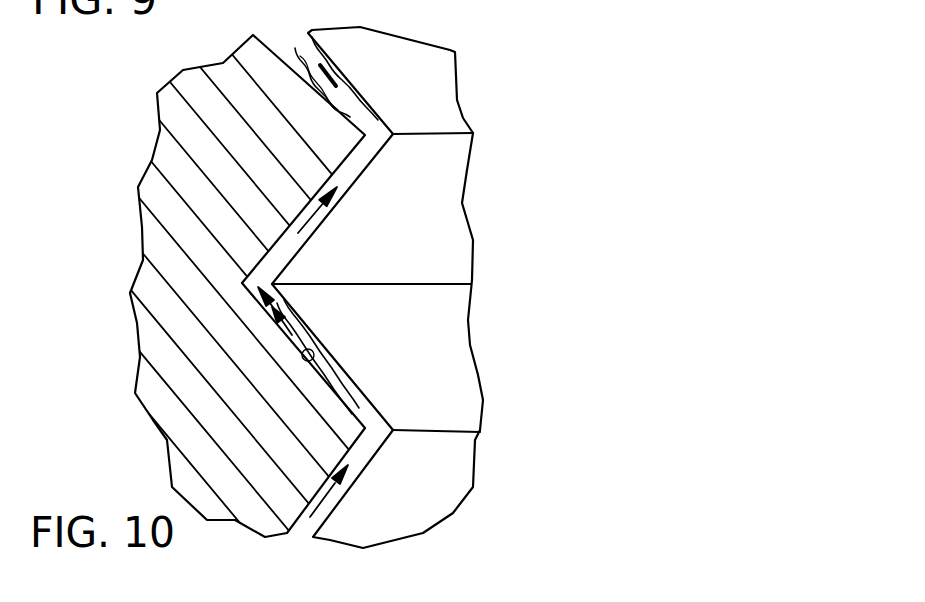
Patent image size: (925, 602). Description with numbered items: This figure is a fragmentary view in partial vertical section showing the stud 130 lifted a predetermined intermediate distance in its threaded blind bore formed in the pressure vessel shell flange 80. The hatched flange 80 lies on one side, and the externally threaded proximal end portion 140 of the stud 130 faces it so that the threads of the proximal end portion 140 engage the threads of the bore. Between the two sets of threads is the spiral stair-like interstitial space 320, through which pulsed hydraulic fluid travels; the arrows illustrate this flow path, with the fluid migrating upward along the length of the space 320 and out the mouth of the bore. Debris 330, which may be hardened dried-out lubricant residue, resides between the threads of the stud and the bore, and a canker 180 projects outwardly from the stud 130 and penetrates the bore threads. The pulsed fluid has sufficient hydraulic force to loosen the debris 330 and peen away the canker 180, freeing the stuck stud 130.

The pressure vessel shell flange 80 is at (164, 278).
The stud 130 is at (433, 101).
The proximal end portion 140 is at (440, 240).
The spiral stair-like interstitial space 320 is at (380, 460).
The debris 330 is at (328, 53).
The canker 180 is at (327, 347).